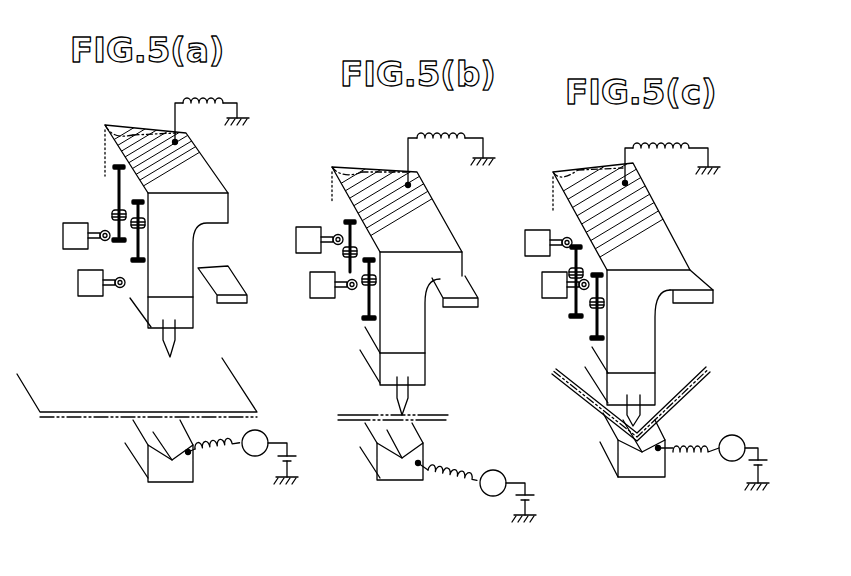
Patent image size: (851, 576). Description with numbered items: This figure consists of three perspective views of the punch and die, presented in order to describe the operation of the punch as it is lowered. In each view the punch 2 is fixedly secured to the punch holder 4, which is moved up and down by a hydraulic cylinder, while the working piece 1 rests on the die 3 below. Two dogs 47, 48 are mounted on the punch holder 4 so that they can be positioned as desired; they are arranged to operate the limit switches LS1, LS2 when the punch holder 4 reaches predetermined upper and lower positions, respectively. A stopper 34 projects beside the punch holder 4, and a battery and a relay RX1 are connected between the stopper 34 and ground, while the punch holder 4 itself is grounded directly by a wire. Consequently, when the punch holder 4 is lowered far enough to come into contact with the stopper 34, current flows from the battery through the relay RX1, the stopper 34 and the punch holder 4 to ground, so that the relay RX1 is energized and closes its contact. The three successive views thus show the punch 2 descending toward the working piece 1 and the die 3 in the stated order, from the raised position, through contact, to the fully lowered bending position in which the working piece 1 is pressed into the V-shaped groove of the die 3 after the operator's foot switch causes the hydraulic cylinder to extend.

In FIG. 5A, the working piece 1 is at (100, 418).
In FIG. 5B, the working piece 1 is at (443, 423).
In FIG. 5C, the working piece 1 is at (583, 397).
In FIG. 5A, the punch 2 is at (165, 340).
In FIG. 5B, the punch 2 is at (406, 393).
In FIG. 5C, the punch 2 is at (643, 407).
In FIG. 5A, the die 3 is at (157, 463).
In FIG. 5B, the die 3 is at (390, 462).
In FIG. 5C, the die 3 is at (657, 470).
In FIG. 5A, the punch holder 4 is at (215, 168).
In FIG. 5B, the punch holder 4 is at (450, 220).
In FIG. 5C, the punch holder 4 is at (668, 227).
In FIG. 5A, the stopper 34 is at (233, 307).
In FIG. 5B, the stopper 34 is at (461, 307).
In FIG. 5C, the stopper 34 is at (710, 303).
In FIG. 5A, the dog 47 is at (108, 198).
In FIG. 5B, the dog 47 is at (346, 218).
In FIG. 5C, the dog 47 is at (564, 262).
In FIG. 5A, the dog 48 is at (127, 193).
In FIG. 5B, the dog 48 is at (363, 302).
In FIG. 5C, the dog 48 is at (589, 325).
In FIG. 5A, the limit switch LS1 is at (70, 225).
In FIG. 5B, the limit switch LS1 is at (300, 226).
In FIG. 5C, the limit switch LS1 is at (533, 230).
In FIG. 5A, the limit switch LS2 is at (88, 297).
In FIG. 5B, the limit switch LS2 is at (311, 299).
In FIG. 5C, the limit switch LS2 is at (552, 298).
In FIG. 5A, the relay RX1 is at (262, 433).
In FIG. 5B, the relay RX1 is at (500, 472).
In FIG. 5C, the relay RX1 is at (737, 435).